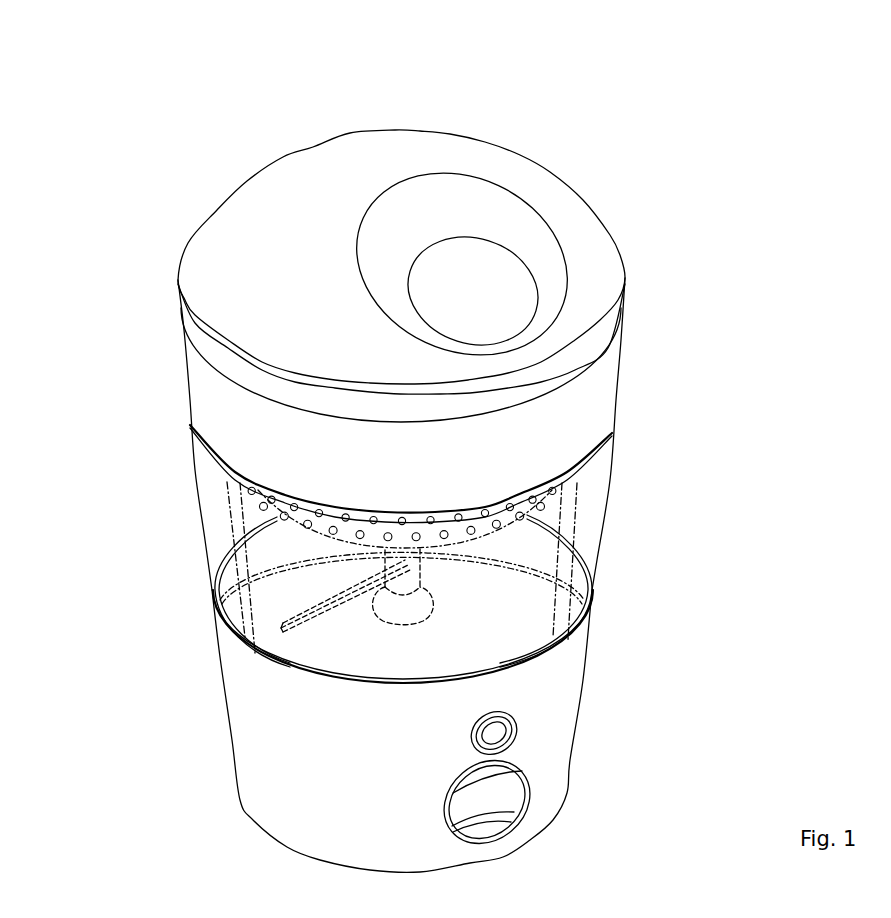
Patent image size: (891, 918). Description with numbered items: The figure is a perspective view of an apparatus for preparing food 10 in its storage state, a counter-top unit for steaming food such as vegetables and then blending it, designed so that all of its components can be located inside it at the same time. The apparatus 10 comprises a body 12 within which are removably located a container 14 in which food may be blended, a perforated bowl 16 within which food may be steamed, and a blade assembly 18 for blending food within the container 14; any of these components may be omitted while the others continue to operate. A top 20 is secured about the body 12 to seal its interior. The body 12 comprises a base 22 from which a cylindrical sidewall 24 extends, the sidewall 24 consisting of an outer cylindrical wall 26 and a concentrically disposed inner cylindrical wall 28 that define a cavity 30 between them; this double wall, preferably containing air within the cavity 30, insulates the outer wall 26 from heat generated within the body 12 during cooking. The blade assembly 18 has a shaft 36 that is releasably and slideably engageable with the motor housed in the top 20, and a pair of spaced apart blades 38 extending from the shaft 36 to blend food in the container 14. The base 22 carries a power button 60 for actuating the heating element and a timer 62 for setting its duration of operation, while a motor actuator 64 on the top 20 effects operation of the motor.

The apparatus for preparing food 10 is at (178, 115).
The body 12 is at (197, 662).
The container 14 is at (248, 562).
The perforated bowl 16 is at (287, 517).
The blade assembly 18 is at (441, 570).
The top 20 is at (595, 222).
The base 22 is at (567, 735).
The cylindrical sidewall 24 is at (628, 554).
The outer cylindrical wall 26 is at (610, 488).
The inner cylindrical wall 28 is at (570, 583).
The cavity 30 is at (590, 520).
The shaft 36 is at (393, 557).
The blades 38 is at (323, 610).
The power button 60 is at (493, 732).
The timer 62 is at (462, 807).
The motor actuator 64 is at (487, 300).